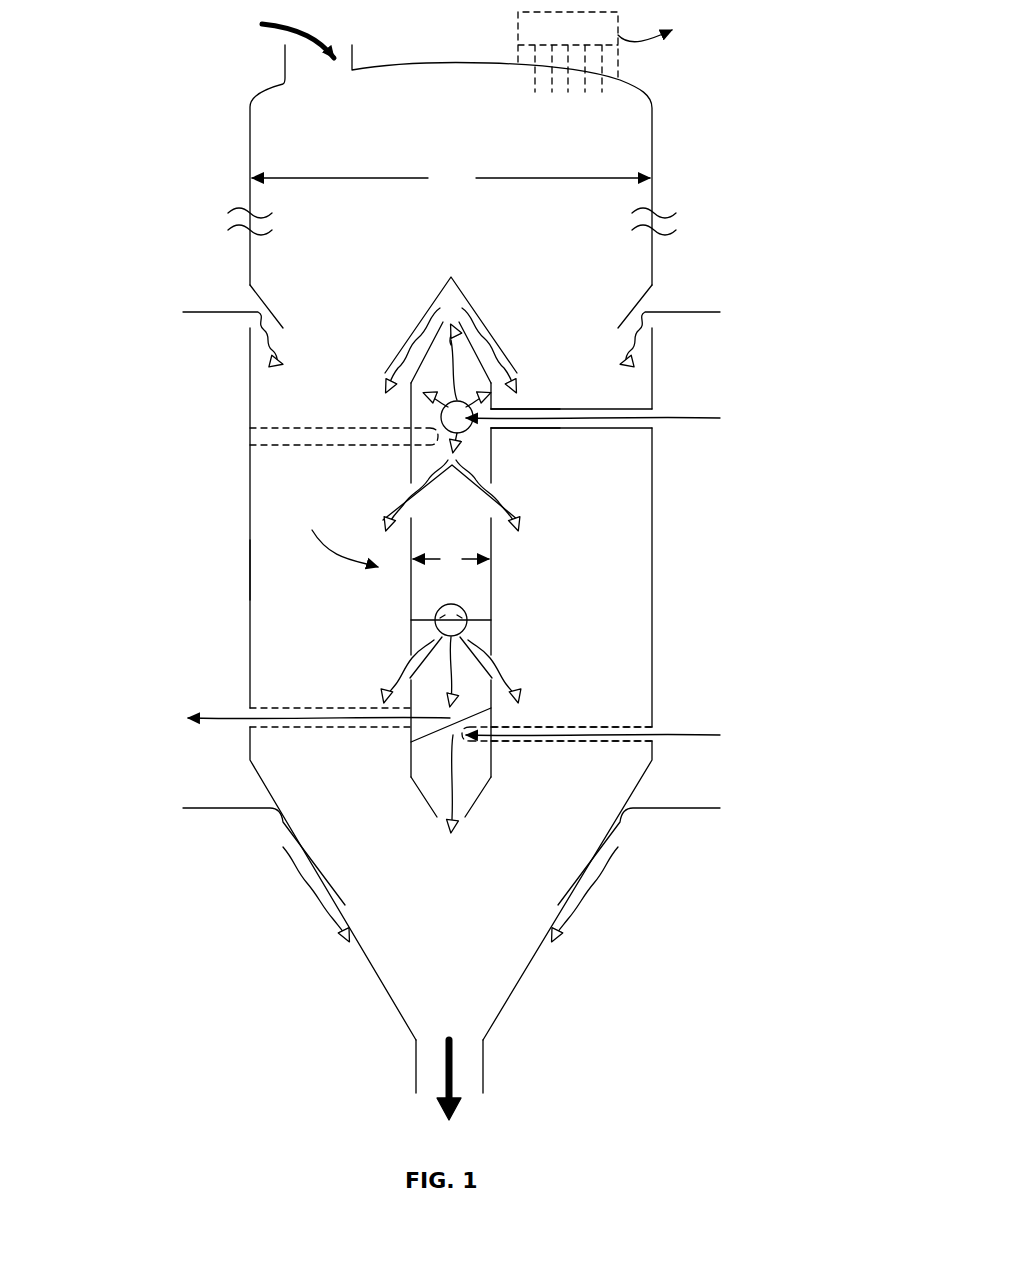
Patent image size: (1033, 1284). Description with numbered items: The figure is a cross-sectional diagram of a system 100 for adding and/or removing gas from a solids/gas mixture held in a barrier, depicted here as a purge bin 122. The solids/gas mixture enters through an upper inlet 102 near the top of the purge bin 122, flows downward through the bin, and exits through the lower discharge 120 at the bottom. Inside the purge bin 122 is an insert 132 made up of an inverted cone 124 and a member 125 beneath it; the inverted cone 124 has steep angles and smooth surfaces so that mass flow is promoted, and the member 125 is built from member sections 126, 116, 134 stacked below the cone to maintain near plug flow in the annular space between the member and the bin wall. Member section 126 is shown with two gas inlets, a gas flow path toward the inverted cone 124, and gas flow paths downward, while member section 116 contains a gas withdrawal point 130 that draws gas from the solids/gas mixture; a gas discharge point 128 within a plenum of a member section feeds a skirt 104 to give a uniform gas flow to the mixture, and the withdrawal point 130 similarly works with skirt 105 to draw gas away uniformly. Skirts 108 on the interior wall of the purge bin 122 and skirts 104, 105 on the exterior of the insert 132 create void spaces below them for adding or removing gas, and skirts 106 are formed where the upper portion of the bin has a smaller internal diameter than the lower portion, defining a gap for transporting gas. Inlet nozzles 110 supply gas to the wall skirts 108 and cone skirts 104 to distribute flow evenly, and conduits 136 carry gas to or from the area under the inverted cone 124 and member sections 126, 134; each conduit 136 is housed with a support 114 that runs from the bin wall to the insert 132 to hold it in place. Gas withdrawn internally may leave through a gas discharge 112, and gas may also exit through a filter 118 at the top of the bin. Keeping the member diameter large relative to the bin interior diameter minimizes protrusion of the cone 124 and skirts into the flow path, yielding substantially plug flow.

The system 100 is at (200, 125).
The upper inlet 102 is at (271, 35).
The skirt 104 is at (397, 500).
The skirt 105 is at (403, 662).
The skirt 106 is at (282, 842).
The skirt 108 is at (243, 294).
The inlet nozzle 110 is at (663, 408).
The gas discharge 112 is at (245, 707).
The support 114 is at (336, 426).
The member section 116 is at (492, 598).
The filter 118 is at (518, 35).
The lower discharge 120 is at (449, 1066).
The purge bin 122 is at (249, 558).
The inverted cone 124 is at (432, 300).
The member 125 is at (333, 536).
The member section 126 is at (410, 415).
The gas discharge point 128 is at (494, 458).
The gas withdrawal point 130 is at (435, 620).
The insert 132 is at (498, 300).
The member section 134 is at (425, 800).
The conduit 136 is at (573, 430).